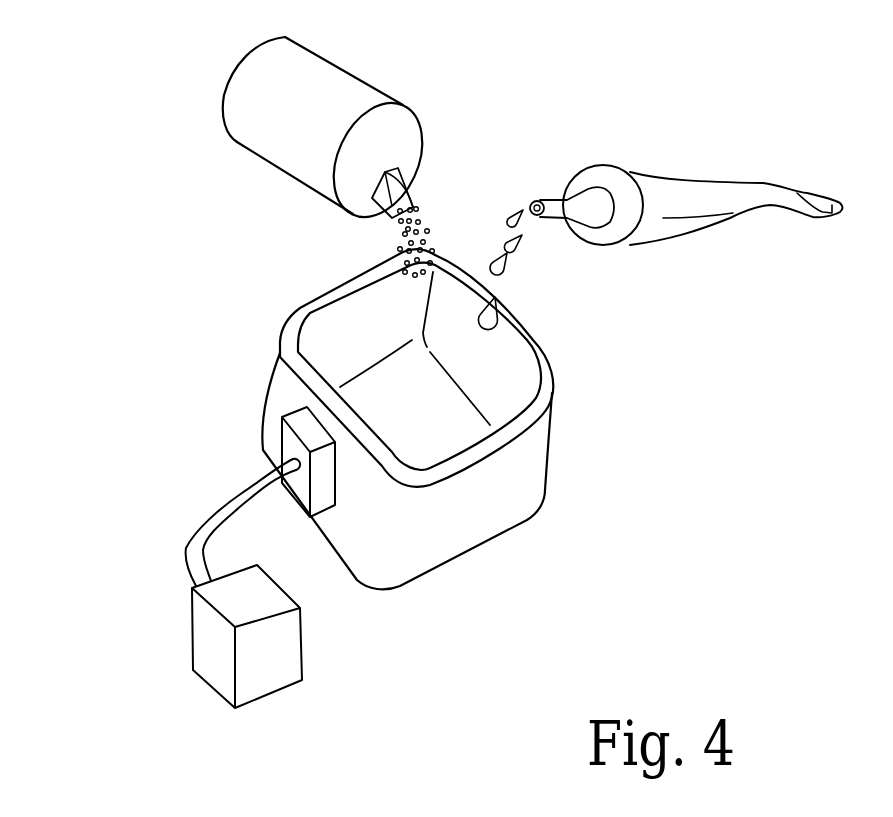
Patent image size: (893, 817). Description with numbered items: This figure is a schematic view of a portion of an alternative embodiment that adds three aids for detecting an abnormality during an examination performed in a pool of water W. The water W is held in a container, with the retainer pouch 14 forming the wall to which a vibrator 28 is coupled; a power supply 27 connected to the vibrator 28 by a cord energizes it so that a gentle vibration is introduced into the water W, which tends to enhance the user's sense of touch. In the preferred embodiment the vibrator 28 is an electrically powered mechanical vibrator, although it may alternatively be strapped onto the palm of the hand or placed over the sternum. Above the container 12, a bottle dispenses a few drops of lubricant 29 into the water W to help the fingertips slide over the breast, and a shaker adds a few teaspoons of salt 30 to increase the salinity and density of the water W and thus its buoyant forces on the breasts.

The container 12 is at (538, 398).
The retainer pouch 14 is at (517, 487).
The power supply 27 is at (273, 660).
The vibrator 28 is at (283, 431).
The lubricant 29 is at (552, 197).
The salt 30 is at (427, 150).
The water W is at (450, 423).